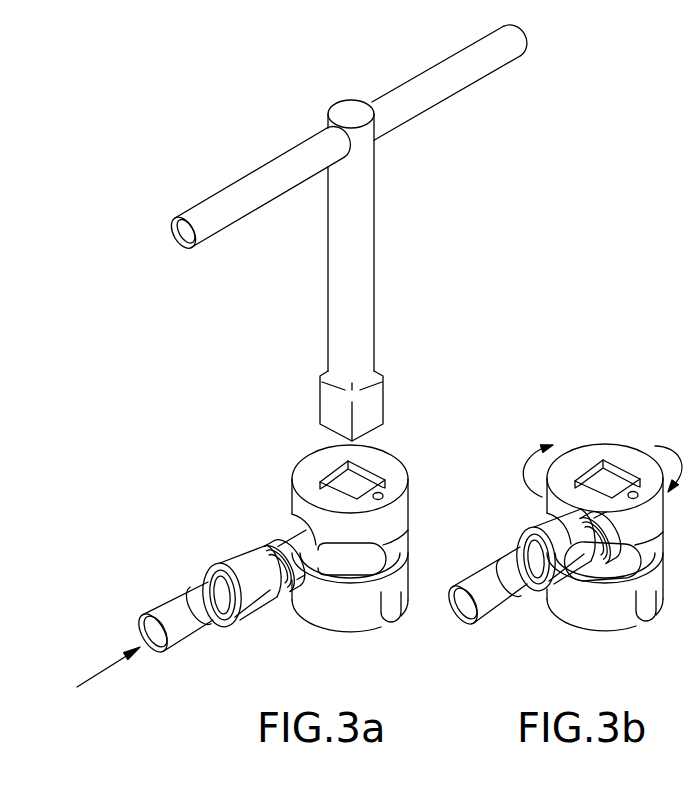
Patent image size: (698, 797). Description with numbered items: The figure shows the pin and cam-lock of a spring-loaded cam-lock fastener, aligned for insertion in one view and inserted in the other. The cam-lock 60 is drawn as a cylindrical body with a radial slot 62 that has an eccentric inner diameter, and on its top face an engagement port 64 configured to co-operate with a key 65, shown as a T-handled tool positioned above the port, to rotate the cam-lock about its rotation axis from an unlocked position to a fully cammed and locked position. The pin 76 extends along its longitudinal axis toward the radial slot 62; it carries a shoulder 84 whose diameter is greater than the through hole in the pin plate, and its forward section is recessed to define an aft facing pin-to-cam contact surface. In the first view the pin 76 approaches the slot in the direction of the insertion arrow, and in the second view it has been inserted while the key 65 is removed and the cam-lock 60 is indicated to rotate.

The cam-lock 60 is at (324, 516).
The radial slot 62 is at (410, 530).
The engagement port 64 is at (363, 477).
The key 65 is at (375, 402).
The pin 76 is at (249, 601).
The shoulder 84 is at (258, 603).